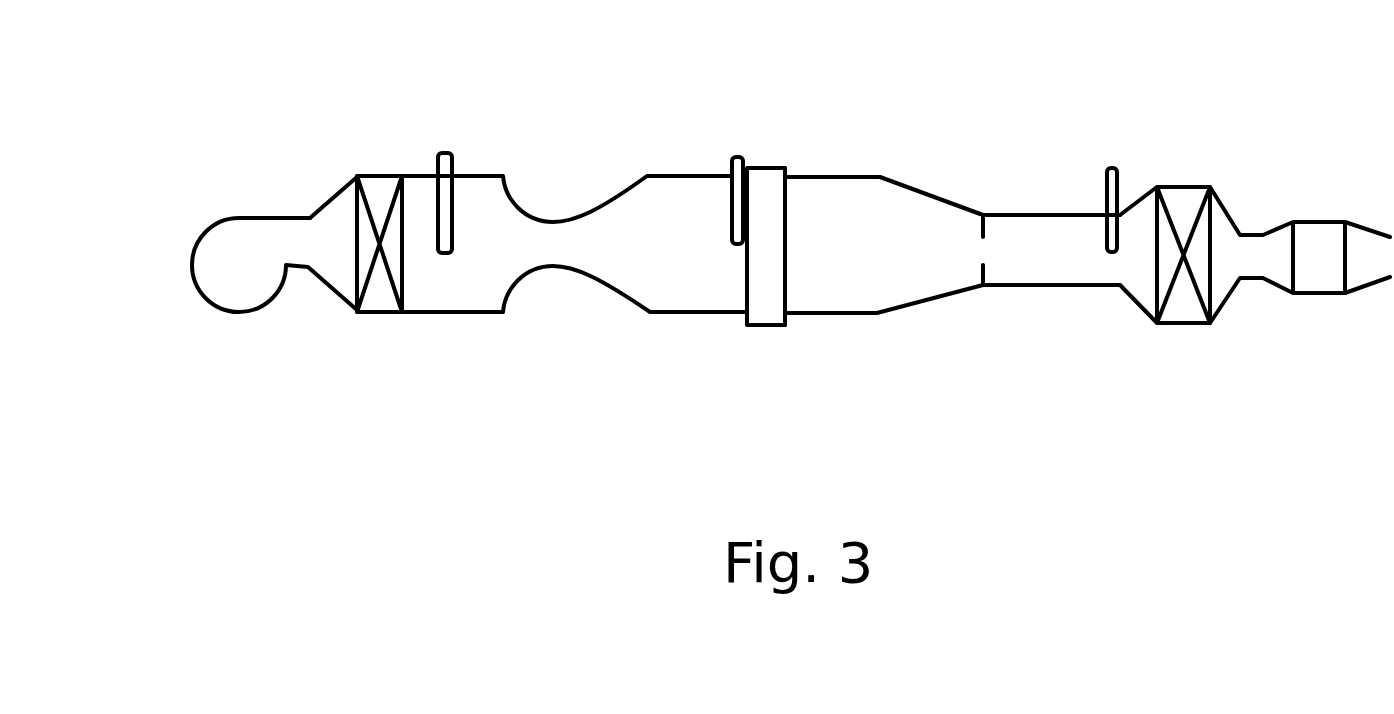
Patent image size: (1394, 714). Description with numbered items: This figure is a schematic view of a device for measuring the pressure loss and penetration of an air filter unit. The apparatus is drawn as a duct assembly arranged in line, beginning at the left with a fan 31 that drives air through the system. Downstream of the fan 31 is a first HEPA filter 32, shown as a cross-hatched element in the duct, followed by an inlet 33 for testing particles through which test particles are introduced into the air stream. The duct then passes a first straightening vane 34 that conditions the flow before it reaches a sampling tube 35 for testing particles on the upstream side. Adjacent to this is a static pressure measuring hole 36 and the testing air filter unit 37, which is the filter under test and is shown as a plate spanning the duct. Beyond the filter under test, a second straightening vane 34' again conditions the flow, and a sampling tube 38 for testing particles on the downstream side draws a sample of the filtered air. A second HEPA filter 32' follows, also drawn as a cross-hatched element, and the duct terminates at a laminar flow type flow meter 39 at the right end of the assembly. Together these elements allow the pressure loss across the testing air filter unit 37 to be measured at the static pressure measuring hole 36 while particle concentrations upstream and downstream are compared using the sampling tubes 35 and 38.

The fan 31 is at (240, 313).
The HEPA filter 32 is at (359, 320).
The inlet for testing particles 33 is at (437, 192).
The straightening vane 34 is at (574, 315).
The sampling tube for testing particles on the upstream side 35 is at (729, 246).
The static pressure measuring hole 36 is at (737, 314).
The testing air filter unit 37 is at (787, 241).
The straightening vane 34' is at (952, 312).
The sampling tube for testing particles on downstream side 38 is at (1105, 252).
The HEPA filter 32' is at (1136, 327).
The laminar flow type flow meter 39 is at (1305, 222).